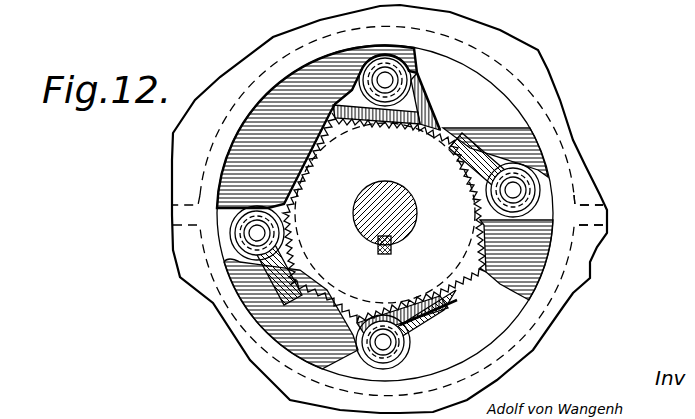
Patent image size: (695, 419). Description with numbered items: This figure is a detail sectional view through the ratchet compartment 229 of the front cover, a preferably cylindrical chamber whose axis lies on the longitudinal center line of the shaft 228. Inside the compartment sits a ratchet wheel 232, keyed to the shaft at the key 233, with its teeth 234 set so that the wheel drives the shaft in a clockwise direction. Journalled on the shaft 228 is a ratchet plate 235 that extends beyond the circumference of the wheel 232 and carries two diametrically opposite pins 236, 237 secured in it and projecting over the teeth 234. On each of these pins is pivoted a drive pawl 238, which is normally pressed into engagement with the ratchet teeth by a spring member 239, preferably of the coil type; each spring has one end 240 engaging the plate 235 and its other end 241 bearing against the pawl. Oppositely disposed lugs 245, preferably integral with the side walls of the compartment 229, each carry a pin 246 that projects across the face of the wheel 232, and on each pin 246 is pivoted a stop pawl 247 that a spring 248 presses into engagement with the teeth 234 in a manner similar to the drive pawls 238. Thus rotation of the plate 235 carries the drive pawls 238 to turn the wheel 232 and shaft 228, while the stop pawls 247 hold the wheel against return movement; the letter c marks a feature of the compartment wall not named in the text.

The shaft 228 is at (400, 190).
The ratchet compartment 229 is at (523, 275).
The ratchet wheel 232 is at (318, 170).
The key 233 is at (392, 251).
The teeth 234 is at (292, 176).
The ratchet plate 235 is at (425, 110).
The pin 236 is at (408, 80).
The pin 237 is at (365, 340).
The drive pawl 238 is at (345, 95).
The spring member 239 is at (440, 36).
The end 240 is at (318, 23).
The end 241 is at (315, 100).
The lug 245 is at (535, 168).
The pin 246 is at (540, 182).
The stop pawl 247 is at (490, 140).
The spring 248 is at (150, 268).
The slot c is at (603, 230).